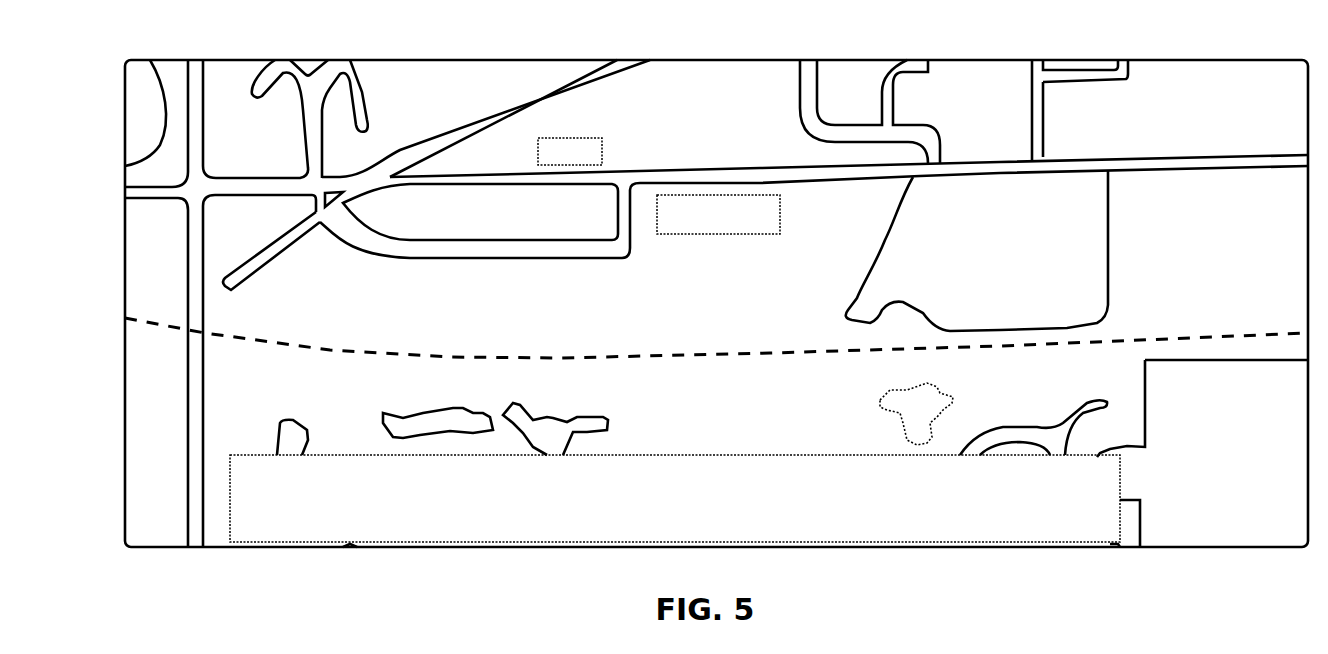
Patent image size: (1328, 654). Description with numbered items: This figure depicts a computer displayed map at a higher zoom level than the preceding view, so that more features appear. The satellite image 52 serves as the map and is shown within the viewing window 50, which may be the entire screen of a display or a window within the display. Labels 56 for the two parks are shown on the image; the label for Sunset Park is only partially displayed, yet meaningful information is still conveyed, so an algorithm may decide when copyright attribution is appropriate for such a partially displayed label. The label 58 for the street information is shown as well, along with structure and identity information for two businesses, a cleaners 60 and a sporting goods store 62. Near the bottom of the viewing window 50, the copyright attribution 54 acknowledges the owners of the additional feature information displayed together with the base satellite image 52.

The viewing window 50 is at (1168, 60).
The satellite image 52 is at (240, 240).
The copyright attribution 54 is at (915, 545).
The labels for the two parks 56 is at (1203, 397).
The label for the street information 58 is at (742, 130).
The cleaners 60 is at (645, 122).
The sporting goods store 62 is at (717, 302).